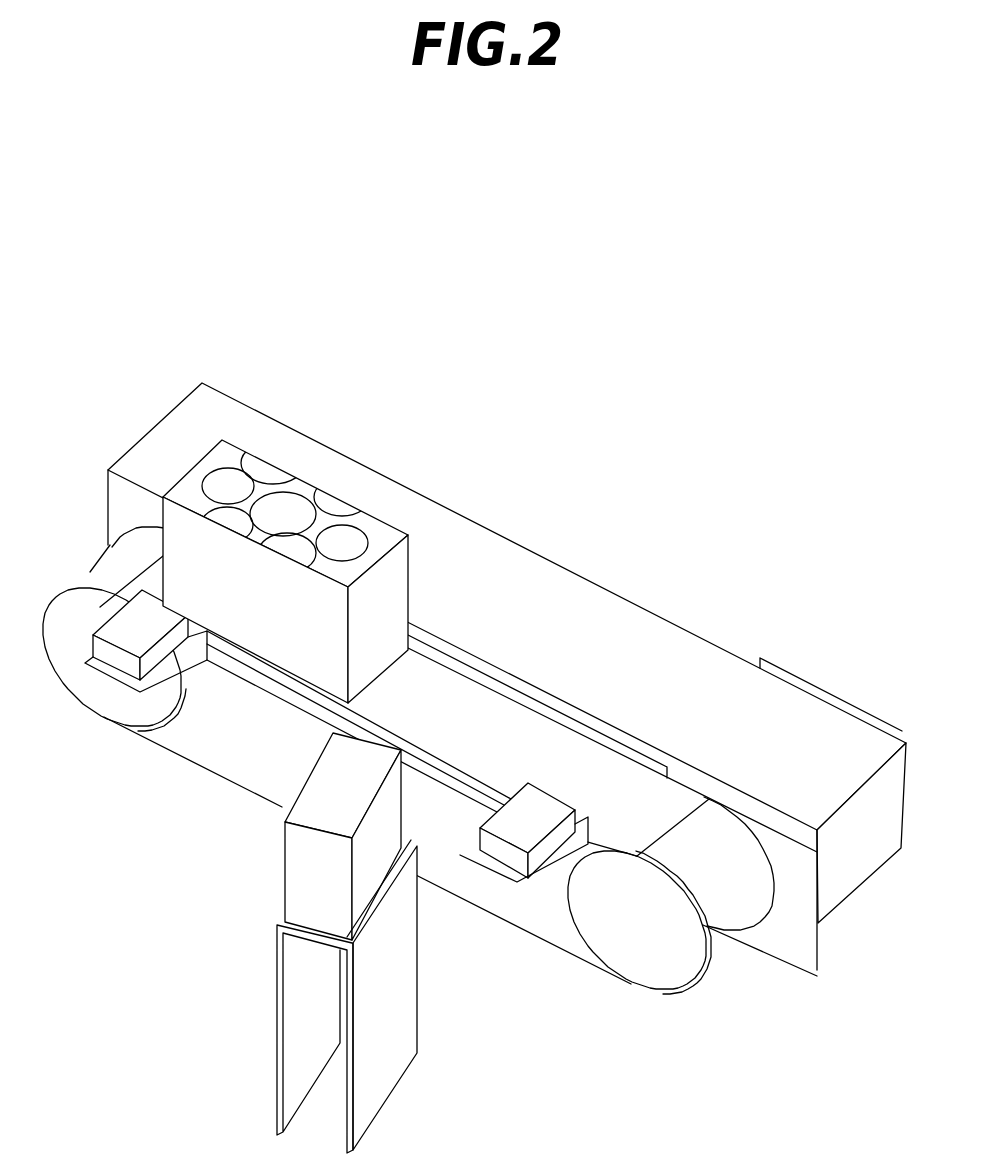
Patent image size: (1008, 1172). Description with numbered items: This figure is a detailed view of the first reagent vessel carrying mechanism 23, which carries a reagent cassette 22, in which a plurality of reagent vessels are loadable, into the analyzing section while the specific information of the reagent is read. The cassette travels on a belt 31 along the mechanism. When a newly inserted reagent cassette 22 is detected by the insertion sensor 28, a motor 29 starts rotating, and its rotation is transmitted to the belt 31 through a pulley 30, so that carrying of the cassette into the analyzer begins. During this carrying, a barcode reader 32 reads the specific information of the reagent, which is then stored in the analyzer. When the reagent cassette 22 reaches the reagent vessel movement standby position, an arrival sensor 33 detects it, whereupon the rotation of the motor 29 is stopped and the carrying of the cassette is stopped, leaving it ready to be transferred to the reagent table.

The reagent cassette 22 is at (200, 457).
The first reagent vessel carrying mechanism 23 is at (620, 562).
The insertion sensor 28 is at (517, 857).
The motor 29 is at (847, 867).
The pulley 30 is at (645, 960).
The belt 31 is at (723, 937).
The barcode reader 32 is at (282, 868).
The arrival sensor 33 is at (112, 630).